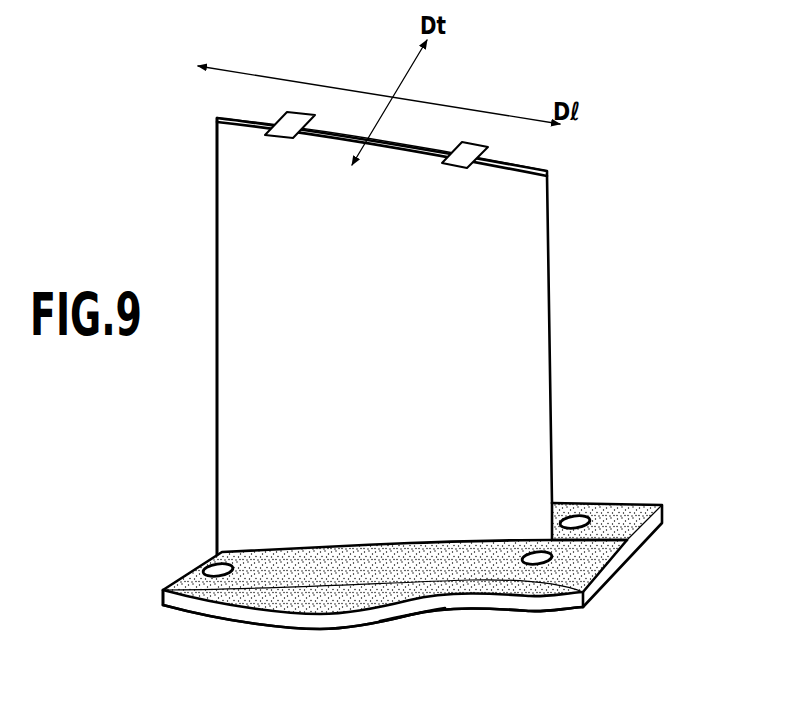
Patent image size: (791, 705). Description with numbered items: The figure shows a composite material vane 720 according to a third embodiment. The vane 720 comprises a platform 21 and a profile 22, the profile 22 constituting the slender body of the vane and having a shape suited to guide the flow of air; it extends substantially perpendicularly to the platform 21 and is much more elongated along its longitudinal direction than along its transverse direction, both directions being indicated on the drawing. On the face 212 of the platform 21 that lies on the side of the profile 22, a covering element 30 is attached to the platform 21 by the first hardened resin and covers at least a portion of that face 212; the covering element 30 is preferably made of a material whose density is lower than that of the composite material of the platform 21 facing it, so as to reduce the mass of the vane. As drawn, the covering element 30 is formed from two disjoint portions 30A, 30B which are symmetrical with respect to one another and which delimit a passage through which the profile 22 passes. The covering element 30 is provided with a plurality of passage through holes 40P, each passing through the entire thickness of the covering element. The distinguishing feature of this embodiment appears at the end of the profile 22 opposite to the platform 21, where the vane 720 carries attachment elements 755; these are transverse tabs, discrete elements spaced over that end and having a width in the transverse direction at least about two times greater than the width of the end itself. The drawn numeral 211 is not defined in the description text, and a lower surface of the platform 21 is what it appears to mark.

The composite material vane 720 is at (560, 275).
The profile 22 is at (248, 198).
The attachment elements 755 is at (298, 113).
The covering element 30 is at (426, 558).
The disjoint portion of the covering element 30A is at (583, 572).
The disjoint portion of the covering element 30B is at (636, 505).
The passage through holes 40P is at (209, 562).
The platform 21 is at (293, 631).
The lower surface edge 211 is at (434, 612).
The face of the platform 212 is at (203, 602).